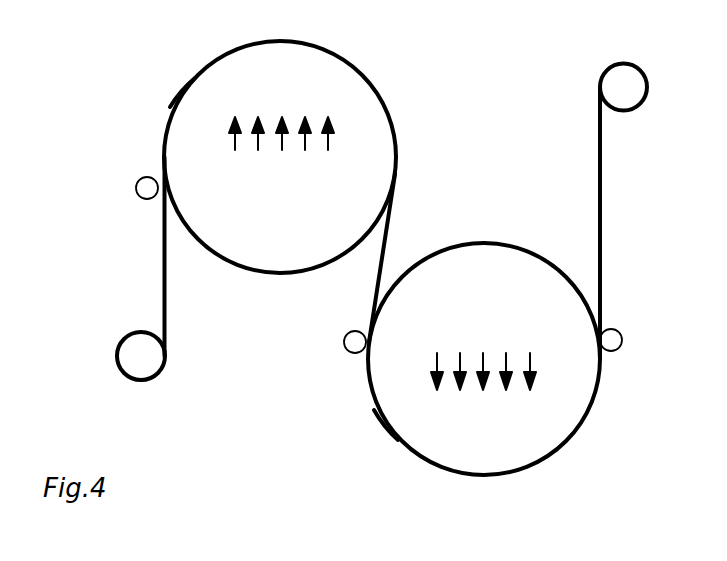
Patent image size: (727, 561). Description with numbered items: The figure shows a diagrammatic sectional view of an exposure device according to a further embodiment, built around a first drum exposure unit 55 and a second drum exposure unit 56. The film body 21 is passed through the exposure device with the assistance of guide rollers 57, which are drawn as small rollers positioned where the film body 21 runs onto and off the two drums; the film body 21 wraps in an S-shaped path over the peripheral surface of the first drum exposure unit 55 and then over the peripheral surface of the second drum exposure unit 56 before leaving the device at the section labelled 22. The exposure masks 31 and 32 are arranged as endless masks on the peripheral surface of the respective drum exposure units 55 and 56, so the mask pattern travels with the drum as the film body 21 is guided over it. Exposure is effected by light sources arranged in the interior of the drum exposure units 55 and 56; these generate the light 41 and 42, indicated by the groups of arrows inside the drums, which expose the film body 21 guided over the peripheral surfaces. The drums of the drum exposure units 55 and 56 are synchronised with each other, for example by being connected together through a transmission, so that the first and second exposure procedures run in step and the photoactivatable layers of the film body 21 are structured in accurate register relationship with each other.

The film body 21 is at (158, 279).
The web (outgoing section) 22 is at (601, 212).
The exposure mask 31 is at (343, 47).
The exposure mask 32 is at (463, 475).
The light 41 is at (281, 153).
The light 42 is at (483, 358).
The first drum exposure unit 55 is at (198, 113).
The second drum exposure unit 56 is at (388, 396).
The guide rollers 57 is at (130, 190).